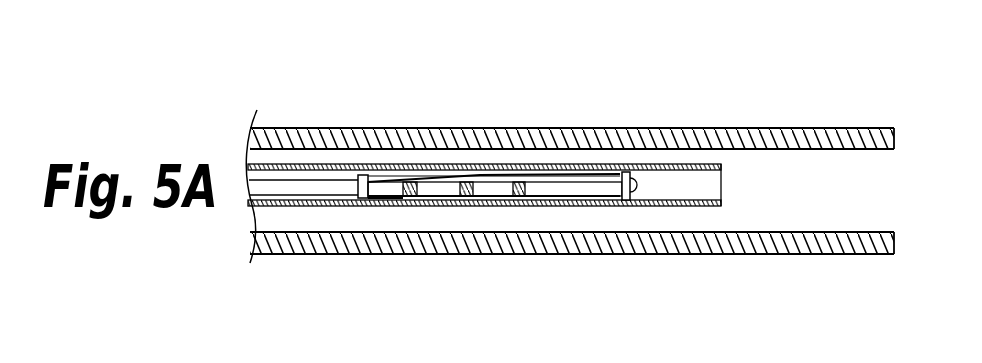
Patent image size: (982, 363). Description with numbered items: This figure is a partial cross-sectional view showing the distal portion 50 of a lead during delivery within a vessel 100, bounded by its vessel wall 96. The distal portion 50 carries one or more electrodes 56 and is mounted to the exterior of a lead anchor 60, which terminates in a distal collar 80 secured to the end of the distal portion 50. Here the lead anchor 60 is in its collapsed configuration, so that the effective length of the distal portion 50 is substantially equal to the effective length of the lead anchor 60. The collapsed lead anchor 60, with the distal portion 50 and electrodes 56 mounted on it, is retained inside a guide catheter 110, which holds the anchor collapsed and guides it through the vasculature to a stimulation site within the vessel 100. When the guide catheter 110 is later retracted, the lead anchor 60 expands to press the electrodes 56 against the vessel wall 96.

The vessel 100 is at (352, 128).
The vessel wall 96 is at (866, 151).
The lead anchor 60 is at (431, 162).
The distal portion 50 is at (314, 172).
The electrodes 56 is at (467, 186).
The guide catheter 110 is at (601, 206).
The distal collar 80 is at (624, 201).